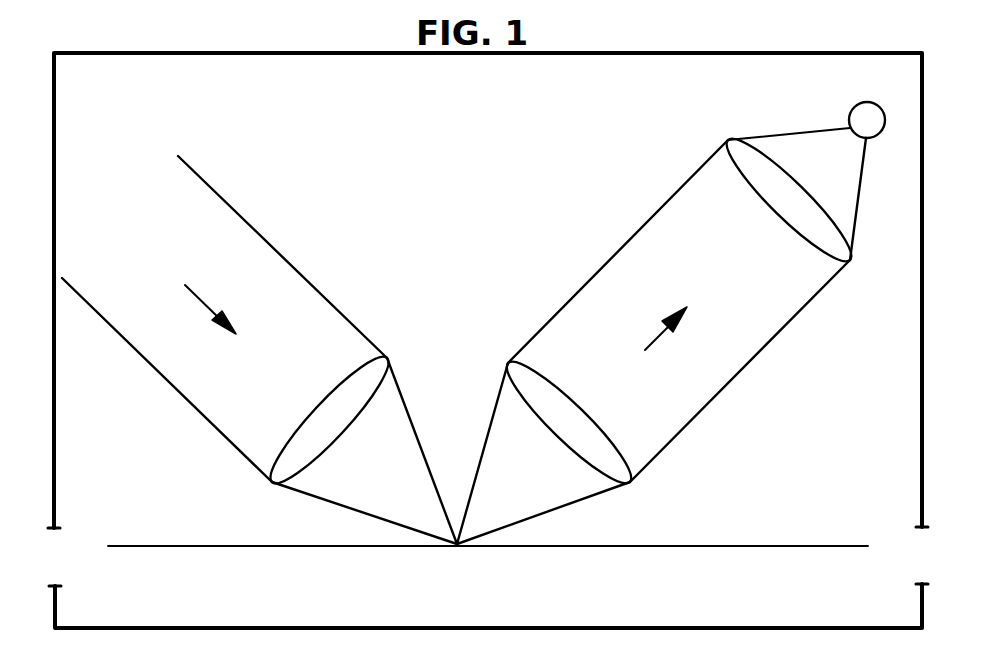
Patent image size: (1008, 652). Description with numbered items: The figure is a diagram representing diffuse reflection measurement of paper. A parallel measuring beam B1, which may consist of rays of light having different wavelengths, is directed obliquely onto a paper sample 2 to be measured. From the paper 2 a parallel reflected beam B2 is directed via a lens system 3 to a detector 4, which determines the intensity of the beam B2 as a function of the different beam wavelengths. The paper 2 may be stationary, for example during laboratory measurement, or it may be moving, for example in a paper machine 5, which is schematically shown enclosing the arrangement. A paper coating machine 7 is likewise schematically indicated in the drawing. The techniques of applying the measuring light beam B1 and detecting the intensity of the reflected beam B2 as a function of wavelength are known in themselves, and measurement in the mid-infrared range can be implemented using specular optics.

The paper sample 2 is at (356, 548).
The lens system 3 is at (508, 363).
The detector 4 is at (863, 113).
The paper machine 5 is at (57, 467).
The paper coating machine 7 is at (389, 358).
The measuring beam B1 is at (255, 246).
The reflected beam B2 is at (645, 236).